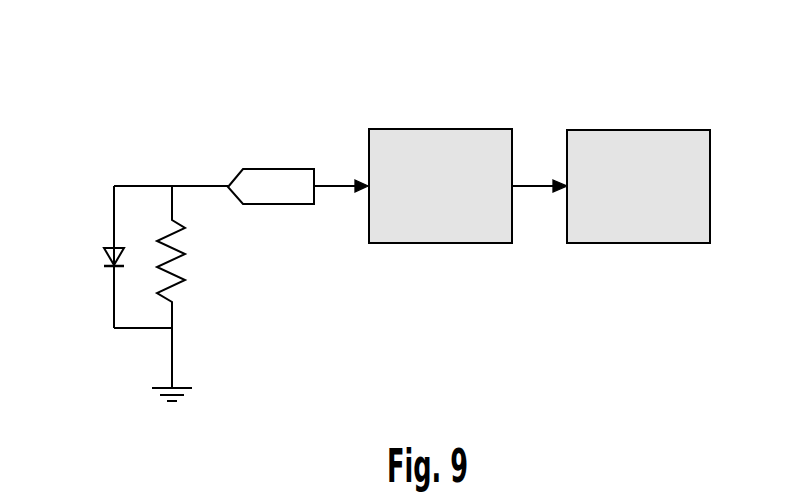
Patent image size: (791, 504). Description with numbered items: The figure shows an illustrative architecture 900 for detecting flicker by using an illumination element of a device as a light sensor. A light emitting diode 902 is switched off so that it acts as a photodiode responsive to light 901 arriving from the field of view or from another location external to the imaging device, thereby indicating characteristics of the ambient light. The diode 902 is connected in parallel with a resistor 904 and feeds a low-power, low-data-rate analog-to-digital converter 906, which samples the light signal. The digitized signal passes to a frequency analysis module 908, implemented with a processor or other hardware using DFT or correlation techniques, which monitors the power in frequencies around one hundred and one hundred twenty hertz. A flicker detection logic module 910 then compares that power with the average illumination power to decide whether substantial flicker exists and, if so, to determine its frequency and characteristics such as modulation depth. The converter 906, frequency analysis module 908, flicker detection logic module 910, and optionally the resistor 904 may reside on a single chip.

The architecture 900 is at (145, 50).
The light 901 is at (95, 310).
The light emitting diode 902 is at (110, 183).
The resistor 904 is at (183, 272).
The analog-to-digital converter 906 is at (255, 168).
The frequency analysis module 908 is at (443, 130).
The flicker detection logic module 910 is at (703, 243).